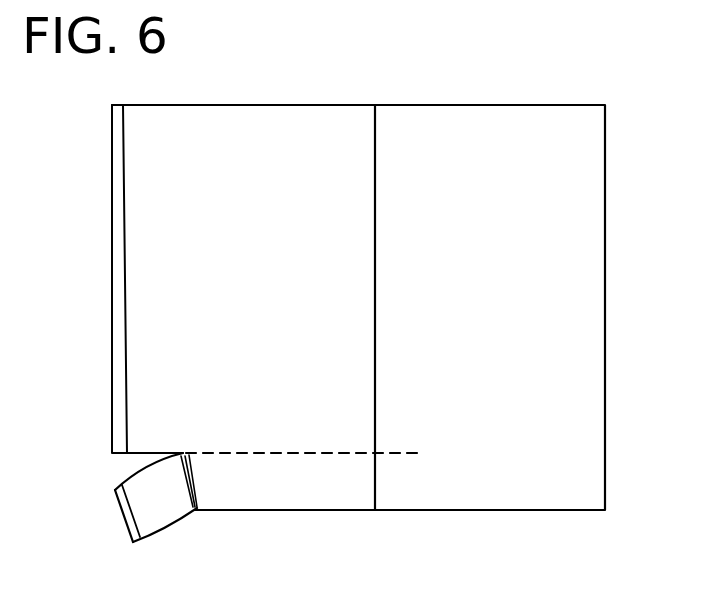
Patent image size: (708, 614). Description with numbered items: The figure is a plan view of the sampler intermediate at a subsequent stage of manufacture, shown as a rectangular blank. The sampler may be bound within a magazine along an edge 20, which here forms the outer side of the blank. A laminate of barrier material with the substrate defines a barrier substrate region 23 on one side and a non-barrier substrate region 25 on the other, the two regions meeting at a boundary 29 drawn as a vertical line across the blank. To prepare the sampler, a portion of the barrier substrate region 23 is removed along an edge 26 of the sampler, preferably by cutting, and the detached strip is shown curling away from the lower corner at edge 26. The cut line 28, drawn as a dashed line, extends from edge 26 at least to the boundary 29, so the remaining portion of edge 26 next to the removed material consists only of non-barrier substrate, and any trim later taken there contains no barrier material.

The edge 20 is at (605, 327).
The barrier substrate region 23 is at (247, 122).
The non-barrier substrate region 25 is at (513, 118).
The edge 26 is at (155, 523).
The cut line 28 is at (280, 452).
The boundary 29 is at (375, 233).